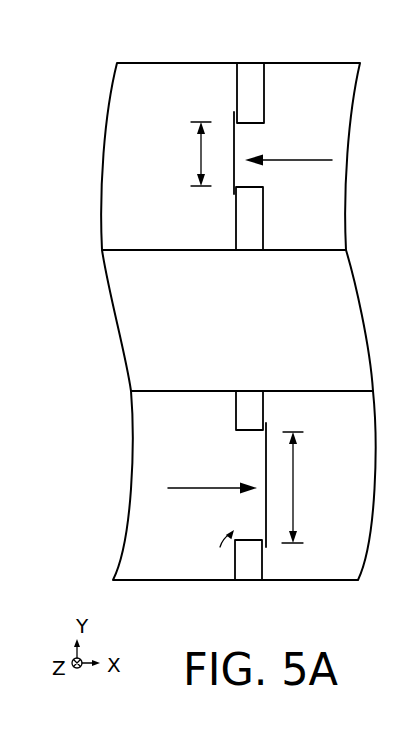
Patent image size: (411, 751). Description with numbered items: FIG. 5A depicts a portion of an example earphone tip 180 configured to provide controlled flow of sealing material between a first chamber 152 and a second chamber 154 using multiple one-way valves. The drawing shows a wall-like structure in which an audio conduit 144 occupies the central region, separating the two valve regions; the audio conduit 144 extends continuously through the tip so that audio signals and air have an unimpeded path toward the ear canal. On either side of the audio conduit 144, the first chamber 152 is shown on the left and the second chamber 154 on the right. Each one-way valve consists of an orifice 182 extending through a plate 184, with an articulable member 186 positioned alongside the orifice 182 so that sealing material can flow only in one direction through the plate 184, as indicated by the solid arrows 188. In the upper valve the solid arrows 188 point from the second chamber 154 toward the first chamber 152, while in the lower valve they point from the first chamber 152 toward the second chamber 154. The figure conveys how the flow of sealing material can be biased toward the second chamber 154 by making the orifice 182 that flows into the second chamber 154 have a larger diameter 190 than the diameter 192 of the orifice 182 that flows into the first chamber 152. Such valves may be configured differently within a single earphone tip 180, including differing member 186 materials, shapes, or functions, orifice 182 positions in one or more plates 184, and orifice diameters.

The earphone tip 180 is at (103, 48).
The audio conduit 144 is at (266, 328).
The first chamber 152 is at (153, 92).
The second chamber 154 is at (344, 92).
The orifice 182 is at (208, 550).
The plate 184 is at (264, 99).
The articulable member 186 is at (234, 192).
The solid arrows 188 is at (332, 161).
The larger diameter 190 is at (309, 487).
The diameter 192 is at (184, 154).